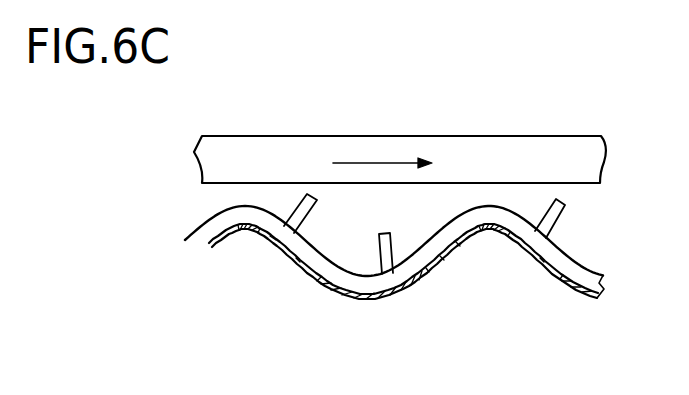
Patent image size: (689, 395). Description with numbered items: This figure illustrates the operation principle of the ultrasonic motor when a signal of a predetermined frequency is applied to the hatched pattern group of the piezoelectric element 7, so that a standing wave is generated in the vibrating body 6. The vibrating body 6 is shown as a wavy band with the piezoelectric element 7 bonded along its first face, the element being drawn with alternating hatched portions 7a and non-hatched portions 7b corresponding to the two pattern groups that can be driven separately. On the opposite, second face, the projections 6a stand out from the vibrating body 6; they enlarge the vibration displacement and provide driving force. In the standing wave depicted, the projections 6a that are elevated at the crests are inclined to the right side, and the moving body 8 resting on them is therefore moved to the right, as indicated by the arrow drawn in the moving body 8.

The moving body 8 is at (588, 160).
The vibrating body 6 is at (600, 283).
The projections 6a is at (548, 206).
The piezoelectric element 7 is at (598, 297).
The hatched layer portions at crests and troughs 7a is at (243, 233).
The layer portions on slopes 7b is at (297, 261).